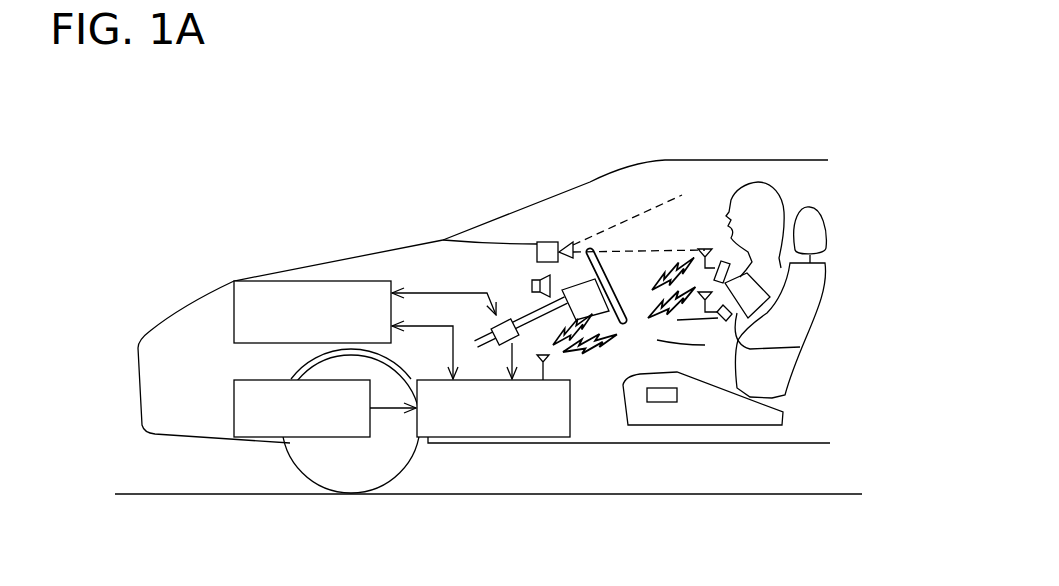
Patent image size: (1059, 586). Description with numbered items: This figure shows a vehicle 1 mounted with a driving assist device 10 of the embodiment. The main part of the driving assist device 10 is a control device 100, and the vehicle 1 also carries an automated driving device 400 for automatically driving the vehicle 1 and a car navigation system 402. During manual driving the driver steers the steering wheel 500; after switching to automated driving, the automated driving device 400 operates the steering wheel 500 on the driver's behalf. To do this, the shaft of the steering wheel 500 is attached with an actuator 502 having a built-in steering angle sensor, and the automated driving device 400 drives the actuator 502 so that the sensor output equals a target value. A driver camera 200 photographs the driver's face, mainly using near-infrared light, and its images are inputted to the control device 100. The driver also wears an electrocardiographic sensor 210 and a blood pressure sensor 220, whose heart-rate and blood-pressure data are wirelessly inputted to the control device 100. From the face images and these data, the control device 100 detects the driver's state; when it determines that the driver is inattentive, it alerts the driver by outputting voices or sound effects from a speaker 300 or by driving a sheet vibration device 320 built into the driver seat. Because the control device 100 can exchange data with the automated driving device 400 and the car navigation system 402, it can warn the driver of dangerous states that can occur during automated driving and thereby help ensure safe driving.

The vehicle 1 is at (797, 158).
The driving assist device 10 is at (297, 137).
The control device 100 is at (450, 438).
The driver camera 200 is at (548, 242).
The electrocardiographic sensor 210 is at (724, 260).
The blood pressure sensor 220 is at (745, 347).
The speaker 300 is at (533, 275).
The sheet vibration device 320 is at (660, 403).
The automated driving device 400 is at (233, 312).
The car navigation system 402 is at (233, 412).
The steering wheel 500 is at (585, 284).
The actuator 502 is at (508, 318).